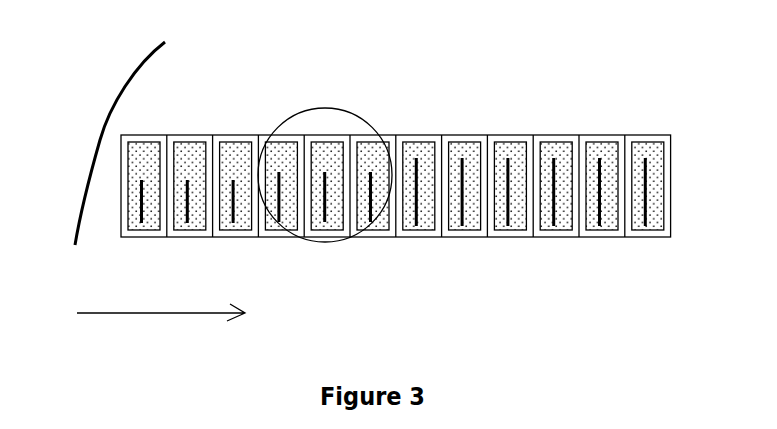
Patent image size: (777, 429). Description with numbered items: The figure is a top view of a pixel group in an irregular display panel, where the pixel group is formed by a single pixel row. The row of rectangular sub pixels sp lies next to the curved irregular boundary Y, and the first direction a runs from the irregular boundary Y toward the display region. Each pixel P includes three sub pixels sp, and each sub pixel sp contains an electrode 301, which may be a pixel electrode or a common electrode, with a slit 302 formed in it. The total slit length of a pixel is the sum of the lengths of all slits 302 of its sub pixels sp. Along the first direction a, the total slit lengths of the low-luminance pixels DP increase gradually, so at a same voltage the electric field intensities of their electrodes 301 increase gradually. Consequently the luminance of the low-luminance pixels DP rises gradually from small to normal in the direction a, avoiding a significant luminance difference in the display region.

The electrode 301 is at (233, 158).
The slit 302 is at (184, 182).
The pixel P is at (330, 126).
The sub pixel sp is at (432, 135).
The low-luminance pixels DP is at (526, 248).
The irregular boundary Y is at (105, 138).
The first direction a is at (161, 303).